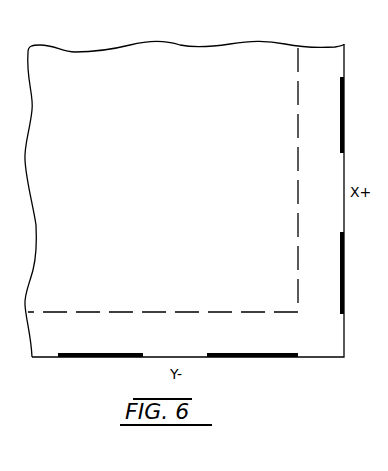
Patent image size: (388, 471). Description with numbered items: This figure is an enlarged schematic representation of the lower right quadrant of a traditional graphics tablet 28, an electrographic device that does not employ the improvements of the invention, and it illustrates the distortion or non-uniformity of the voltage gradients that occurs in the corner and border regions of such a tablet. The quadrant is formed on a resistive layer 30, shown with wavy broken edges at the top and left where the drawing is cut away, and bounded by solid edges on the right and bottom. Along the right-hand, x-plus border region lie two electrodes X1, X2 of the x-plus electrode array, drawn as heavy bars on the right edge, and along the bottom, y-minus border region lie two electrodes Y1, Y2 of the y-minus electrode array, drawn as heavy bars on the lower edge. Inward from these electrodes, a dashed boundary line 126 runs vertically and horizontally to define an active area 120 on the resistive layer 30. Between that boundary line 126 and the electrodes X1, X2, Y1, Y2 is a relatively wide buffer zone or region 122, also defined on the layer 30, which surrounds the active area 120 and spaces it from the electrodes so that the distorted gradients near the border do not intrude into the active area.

The graphics tablet 28 is at (271, 39).
The resistive layer 30 is at (207, 63).
The active area 120 is at (173, 243).
The buffer zone 122 is at (48, 330).
The line bounding active area 126 is at (59, 311).
The electrode X1 is at (340, 274).
The electrode X2 is at (340, 120).
The electrode Y1 is at (261, 353).
The electrode Y2 is at (119, 353).